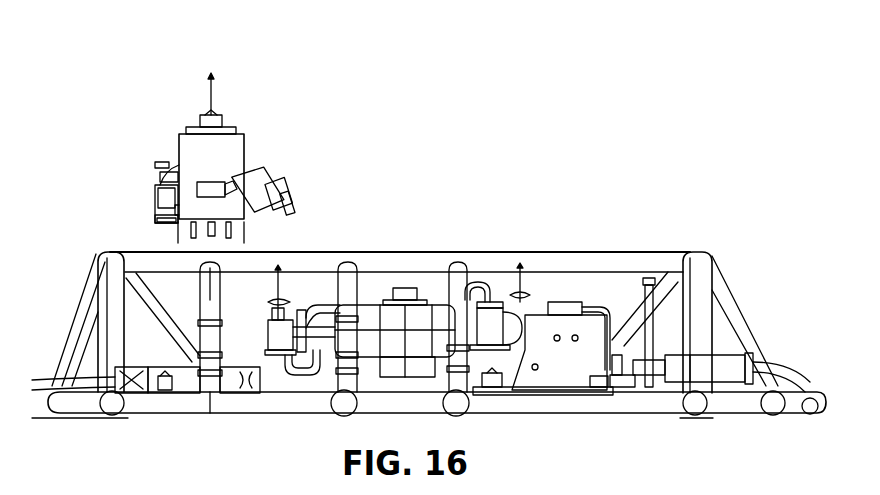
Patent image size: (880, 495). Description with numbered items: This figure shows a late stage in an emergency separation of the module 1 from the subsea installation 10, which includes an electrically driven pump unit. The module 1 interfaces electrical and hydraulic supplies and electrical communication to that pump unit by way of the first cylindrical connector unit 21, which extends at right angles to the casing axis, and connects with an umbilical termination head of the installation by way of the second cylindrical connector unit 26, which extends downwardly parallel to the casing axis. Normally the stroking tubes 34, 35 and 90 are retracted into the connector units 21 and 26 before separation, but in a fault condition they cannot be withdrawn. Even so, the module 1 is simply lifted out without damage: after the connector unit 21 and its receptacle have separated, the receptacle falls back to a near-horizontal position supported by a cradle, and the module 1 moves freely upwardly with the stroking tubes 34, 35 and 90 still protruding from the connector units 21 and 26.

The module 1 is at (176, 146).
The second cylindrical connector unit 26 is at (160, 199).
The stroking tube 90 is at (156, 224).
The first cylindrical connector unit 21 is at (262, 190).
The stroking tube 35 is at (272, 194).
The stroking tube 34 is at (288, 201).
The subsea installation 10 is at (423, 253).